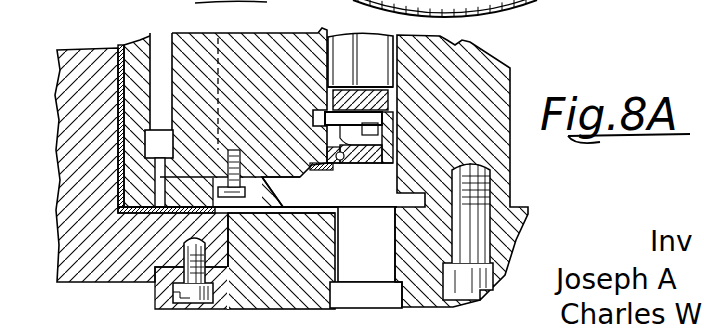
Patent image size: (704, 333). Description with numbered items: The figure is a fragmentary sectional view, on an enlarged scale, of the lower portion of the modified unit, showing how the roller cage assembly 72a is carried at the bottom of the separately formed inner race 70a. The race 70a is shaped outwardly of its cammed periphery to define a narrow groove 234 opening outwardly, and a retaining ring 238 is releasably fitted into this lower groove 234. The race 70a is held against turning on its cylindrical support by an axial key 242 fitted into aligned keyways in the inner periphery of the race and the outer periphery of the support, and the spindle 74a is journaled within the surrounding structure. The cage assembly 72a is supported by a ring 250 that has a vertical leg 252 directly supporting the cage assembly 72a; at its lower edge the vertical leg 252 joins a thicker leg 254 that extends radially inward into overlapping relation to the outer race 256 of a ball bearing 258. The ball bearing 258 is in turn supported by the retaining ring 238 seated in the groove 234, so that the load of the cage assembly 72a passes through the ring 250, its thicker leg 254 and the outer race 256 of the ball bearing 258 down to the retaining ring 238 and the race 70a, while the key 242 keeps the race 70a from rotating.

The axial key 242 is at (200, 31).
The race 70a is at (285, 62).
The cage assembly 72a is at (358, 63).
The vertical leg 252 is at (390, 122).
The ring 250 is at (388, 150).
The ball bearing 258 is at (320, 148).
The outer race 256 is at (325, 167).
The thicker leg 254 is at (380, 203).
The groove 234 is at (300, 181).
The retaining ring 238 is at (323, 166).
The spindle 74a is at (114, 255).